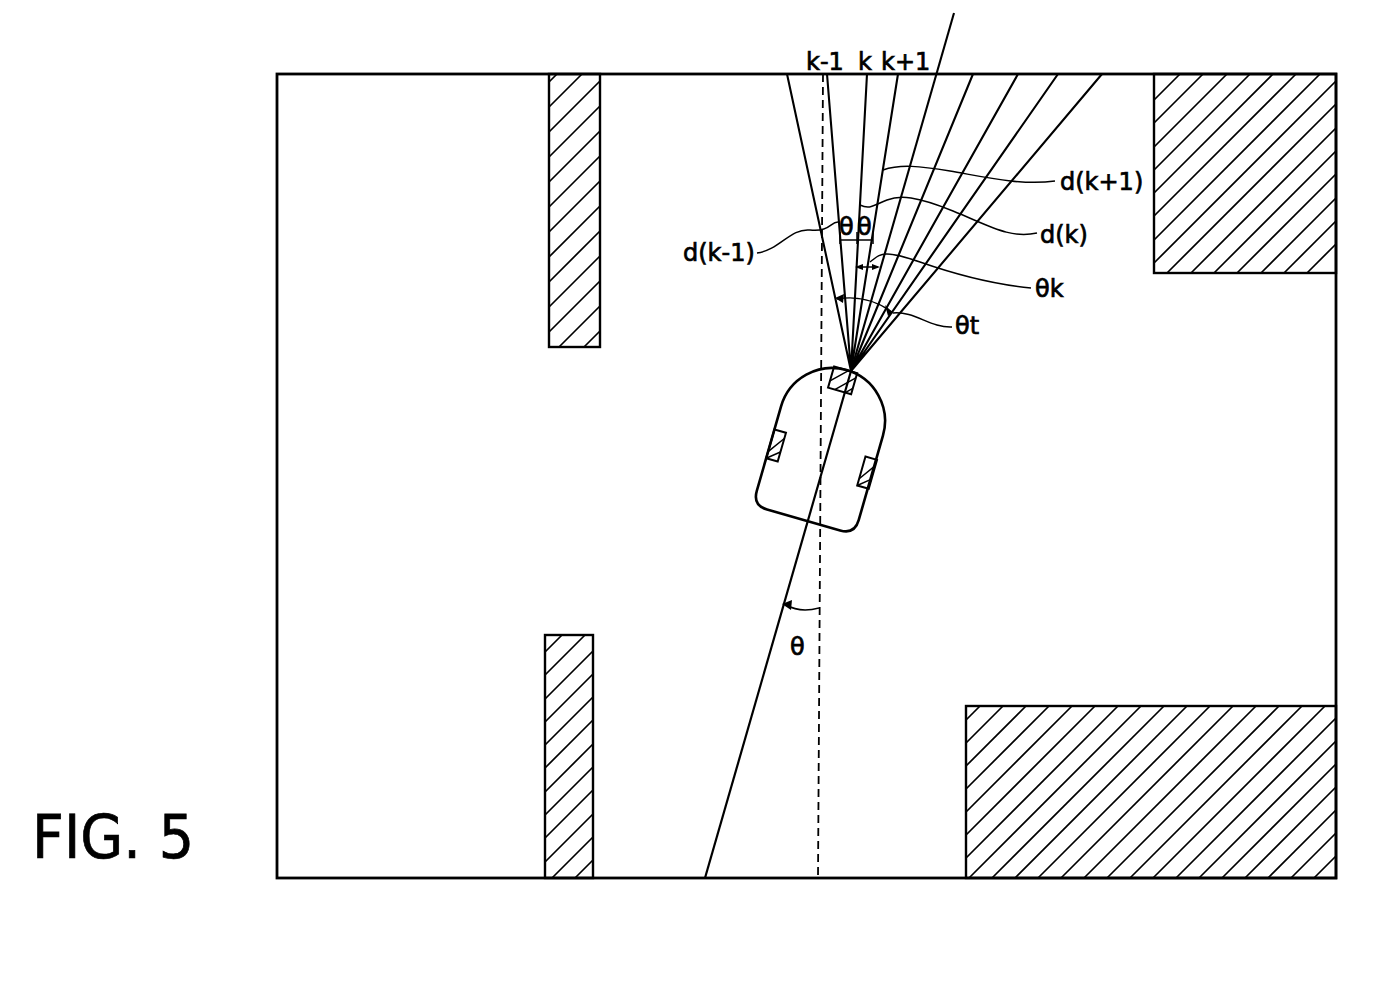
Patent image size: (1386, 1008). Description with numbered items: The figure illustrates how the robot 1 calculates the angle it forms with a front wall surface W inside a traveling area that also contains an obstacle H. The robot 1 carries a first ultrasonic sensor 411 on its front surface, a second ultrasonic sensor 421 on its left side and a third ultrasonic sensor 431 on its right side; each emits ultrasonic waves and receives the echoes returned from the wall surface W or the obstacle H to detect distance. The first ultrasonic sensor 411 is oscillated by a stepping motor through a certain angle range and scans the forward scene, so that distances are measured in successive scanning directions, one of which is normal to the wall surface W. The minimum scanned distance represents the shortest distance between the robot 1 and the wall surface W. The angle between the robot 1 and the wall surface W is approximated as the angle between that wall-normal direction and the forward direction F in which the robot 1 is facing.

The robot 1 is at (887, 404).
The first ultrasonic sensor 411 is at (857, 374).
The second ultrasonic sensor 421 is at (767, 445).
The third ultrasonic sensor 431 is at (878, 473).
The wall surface W is at (711, 74).
The obstacle H is at (1316, 136).
The forward direction F is at (950, 30).